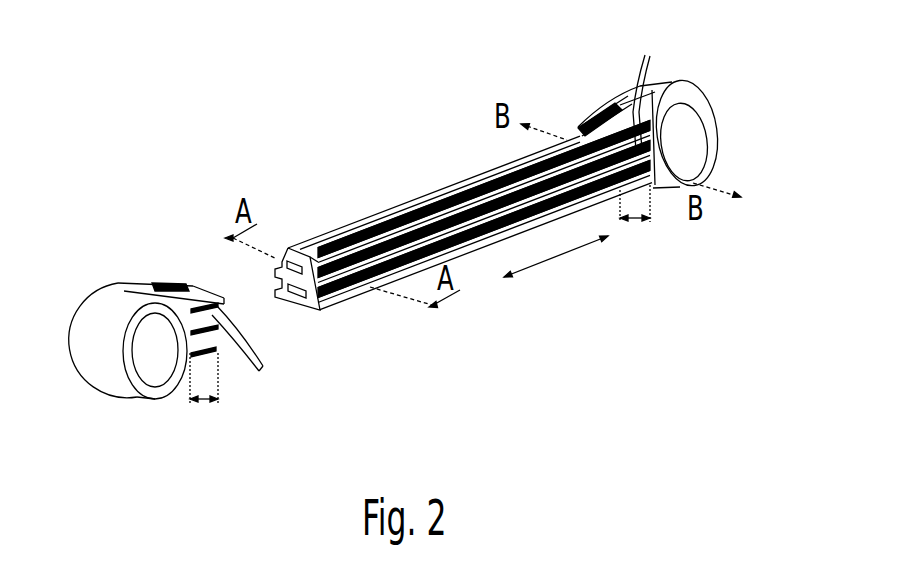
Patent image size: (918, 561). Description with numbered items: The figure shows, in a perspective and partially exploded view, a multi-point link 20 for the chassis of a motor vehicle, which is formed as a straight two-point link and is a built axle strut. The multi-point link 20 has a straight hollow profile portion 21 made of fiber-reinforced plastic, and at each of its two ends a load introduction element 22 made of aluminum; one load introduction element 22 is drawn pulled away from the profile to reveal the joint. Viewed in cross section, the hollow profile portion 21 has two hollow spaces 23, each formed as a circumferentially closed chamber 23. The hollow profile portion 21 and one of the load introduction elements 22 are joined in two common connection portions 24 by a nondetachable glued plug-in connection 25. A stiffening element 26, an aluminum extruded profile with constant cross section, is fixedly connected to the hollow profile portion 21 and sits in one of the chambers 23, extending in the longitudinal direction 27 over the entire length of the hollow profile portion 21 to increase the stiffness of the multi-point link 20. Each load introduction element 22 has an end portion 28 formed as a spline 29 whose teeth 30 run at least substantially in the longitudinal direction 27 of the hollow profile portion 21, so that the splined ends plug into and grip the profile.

The multi-point link 20 is at (410, 245).
The hollow profile portion 21 is at (411, 200).
The load introduction element 22 is at (697, 83).
The hollow space 23 is at (288, 263).
The connection portion 24 is at (637, 222).
The glued plug-in connection 25 is at (597, 110).
The stiffening element 26 is at (298, 294).
The longitudinal direction 27 is at (557, 258).
The end portion 28 is at (205, 404).
The spline 29 is at (187, 272).
The teeth 30 is at (654, 48).